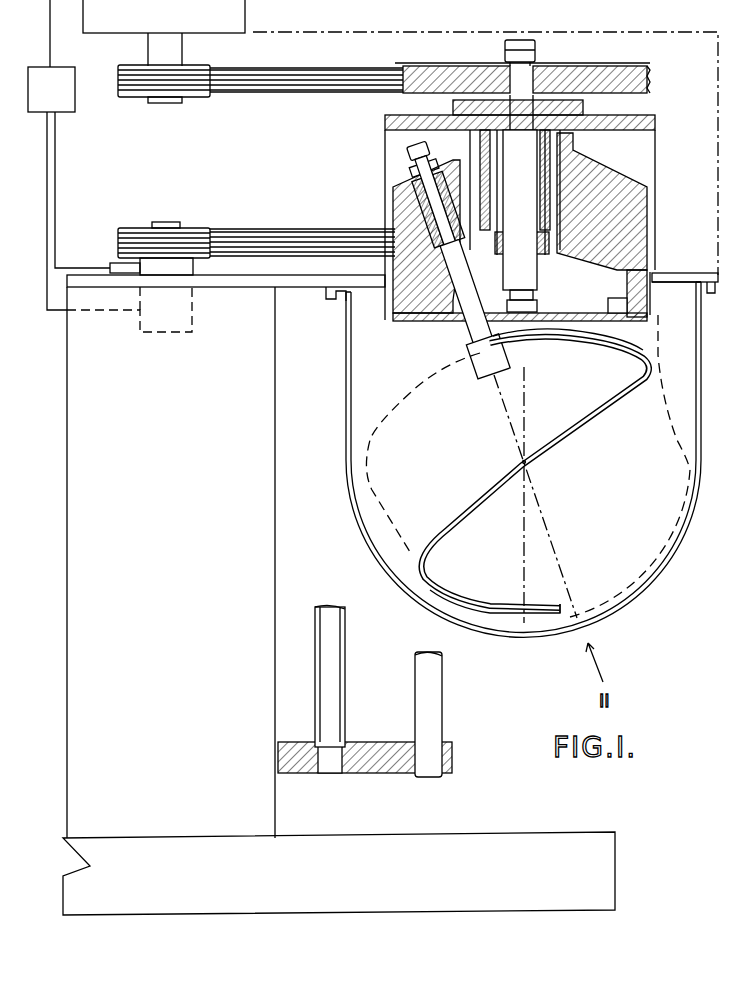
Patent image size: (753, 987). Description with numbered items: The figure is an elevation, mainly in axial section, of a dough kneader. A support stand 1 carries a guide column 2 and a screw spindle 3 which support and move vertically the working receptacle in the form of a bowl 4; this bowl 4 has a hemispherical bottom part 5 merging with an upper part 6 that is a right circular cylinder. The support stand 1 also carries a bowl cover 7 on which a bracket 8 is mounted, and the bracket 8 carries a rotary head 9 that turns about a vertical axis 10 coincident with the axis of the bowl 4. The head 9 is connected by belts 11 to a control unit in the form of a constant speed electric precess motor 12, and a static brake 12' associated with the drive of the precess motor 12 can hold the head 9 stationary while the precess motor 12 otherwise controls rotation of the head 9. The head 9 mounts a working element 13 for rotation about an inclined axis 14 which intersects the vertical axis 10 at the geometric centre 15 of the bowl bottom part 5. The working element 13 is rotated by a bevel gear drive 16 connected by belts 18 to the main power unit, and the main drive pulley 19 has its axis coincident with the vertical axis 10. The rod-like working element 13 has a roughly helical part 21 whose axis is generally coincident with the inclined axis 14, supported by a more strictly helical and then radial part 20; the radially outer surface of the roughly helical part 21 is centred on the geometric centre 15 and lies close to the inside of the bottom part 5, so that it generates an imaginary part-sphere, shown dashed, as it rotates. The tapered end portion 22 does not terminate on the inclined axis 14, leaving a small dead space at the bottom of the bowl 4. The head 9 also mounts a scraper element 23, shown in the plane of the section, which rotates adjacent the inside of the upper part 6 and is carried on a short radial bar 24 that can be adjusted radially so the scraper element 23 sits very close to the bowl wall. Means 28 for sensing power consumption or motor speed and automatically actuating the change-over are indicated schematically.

The support stand 1 is at (597, 864).
The guide column 2 is at (428, 678).
The screw spindle 3 is at (337, 673).
The bowl 4 is at (683, 530).
The hemispherical bottom part 5 is at (652, 565).
The upper part 6 is at (702, 365).
The bowl cover 7 is at (315, 283).
The bracket 8 is at (655, 125).
The rotary head 9 is at (635, 190).
The vertical axis 10 is at (523, 552).
The belts 11 is at (285, 230).
The precess motor 12 is at (129, 324).
The static brake 12' is at (107, 249).
The working element 13 is at (570, 427).
The inclined axis 14 is at (548, 523).
The geometric centre 15 is at (522, 460).
The bevel gear drive 16 is at (497, 322).
The belts 18 is at (313, 93).
The main drive pulley 19 is at (623, 60).
The helical and radial part 20 is at (582, 345).
The roughly helical part 21 is at (440, 533).
The end portion 22 is at (550, 613).
The scraper element 23 is at (672, 403).
The short radial bar 24 is at (648, 297).
The sensing and change-over means 28 is at (65, 83).